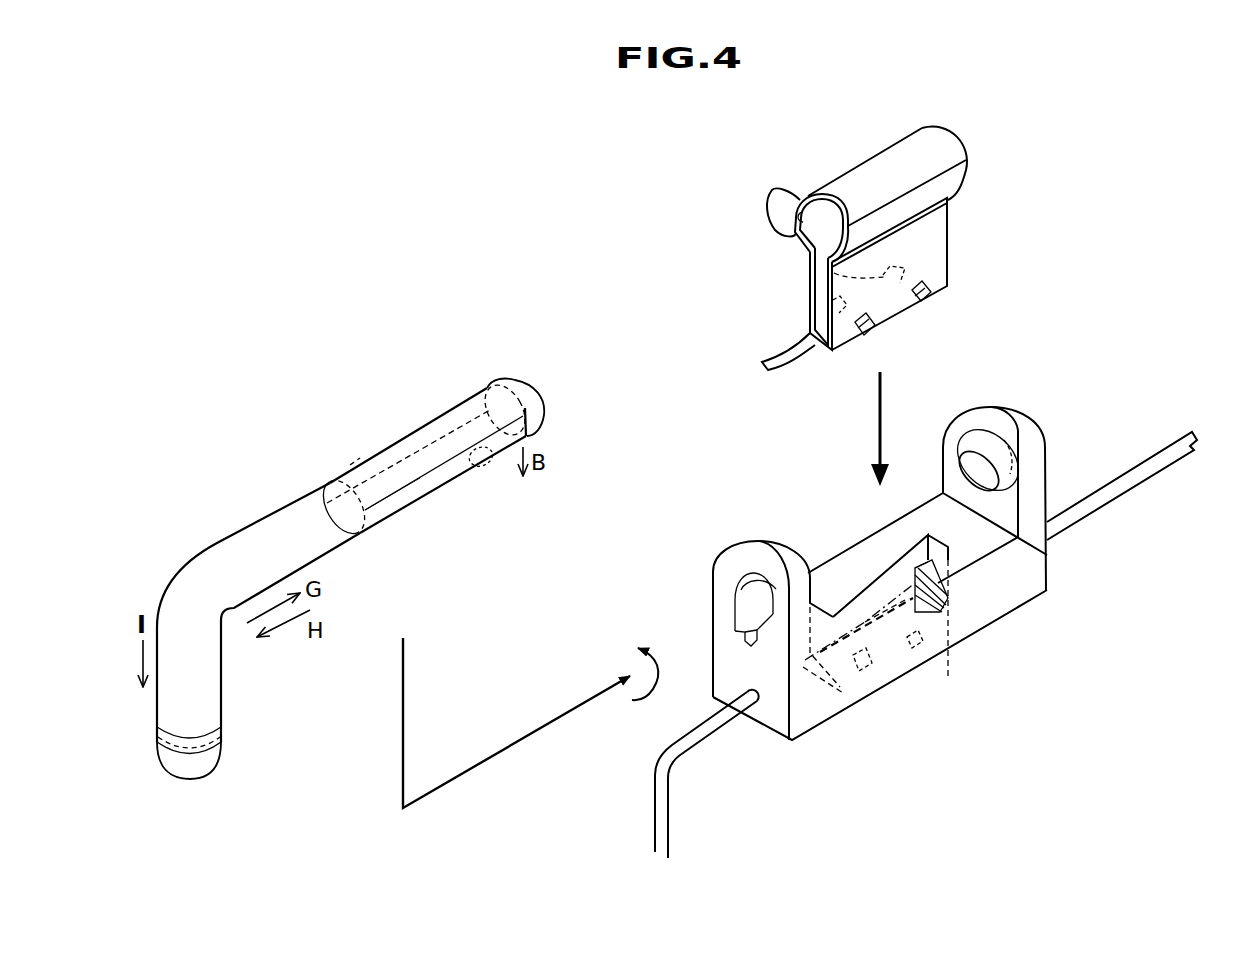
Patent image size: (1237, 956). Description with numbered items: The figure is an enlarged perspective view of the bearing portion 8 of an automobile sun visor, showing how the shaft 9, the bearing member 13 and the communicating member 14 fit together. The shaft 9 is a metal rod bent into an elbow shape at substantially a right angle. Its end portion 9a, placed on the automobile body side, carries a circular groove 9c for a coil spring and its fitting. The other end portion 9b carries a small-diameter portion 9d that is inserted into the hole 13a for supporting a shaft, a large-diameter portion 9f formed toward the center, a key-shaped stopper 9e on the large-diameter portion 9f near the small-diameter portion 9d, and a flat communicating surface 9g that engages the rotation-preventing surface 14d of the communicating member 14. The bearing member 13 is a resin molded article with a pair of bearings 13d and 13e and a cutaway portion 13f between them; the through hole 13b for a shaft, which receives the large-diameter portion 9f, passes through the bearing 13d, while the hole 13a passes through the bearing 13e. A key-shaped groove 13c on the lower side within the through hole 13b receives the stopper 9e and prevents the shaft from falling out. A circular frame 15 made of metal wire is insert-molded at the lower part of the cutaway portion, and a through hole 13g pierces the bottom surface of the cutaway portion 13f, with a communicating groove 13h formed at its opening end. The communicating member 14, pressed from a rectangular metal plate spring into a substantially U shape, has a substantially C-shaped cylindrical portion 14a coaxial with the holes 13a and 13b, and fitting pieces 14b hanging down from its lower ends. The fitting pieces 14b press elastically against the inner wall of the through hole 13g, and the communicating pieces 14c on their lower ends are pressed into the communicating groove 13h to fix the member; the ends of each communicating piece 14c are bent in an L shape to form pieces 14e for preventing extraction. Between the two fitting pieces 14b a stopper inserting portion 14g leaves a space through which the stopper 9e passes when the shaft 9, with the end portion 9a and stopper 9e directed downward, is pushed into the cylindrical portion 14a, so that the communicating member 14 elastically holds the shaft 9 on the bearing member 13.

The hinge assembly 8 is at (1016, 750).
The shaft 9 is at (231, 553).
The end portion 9a is at (218, 680).
The end portion 9b is at (440, 423).
The circular groove 9c is at (222, 733).
The portion with a small diameter 9d is at (518, 382).
The stopper 9e is at (490, 466).
The portion with a large diameter 9f is at (350, 465).
The flat communicating surface 9g is at (423, 487).
The bearing member 13 is at (987, 590).
The hole for supporting a shaft 13a is at (963, 453).
The through hole for a shaft 13b is at (735, 597).
The key-shaped groove 13c is at (752, 650).
The bearing 13d is at (763, 557).
The bearing 13e is at (1016, 428).
The cutaway portion 13f is at (967, 552).
The through hole 13g is at (913, 580).
The communicating groove 13h is at (843, 662).
The communicating member 14 is at (870, 170).
The cylindrical portion 14a is at (930, 143).
The fitting piece 14b is at (917, 245).
The communicating piece 14c is at (800, 287).
The surface for preventing rotation 14d is at (771, 197).
The piece for preventing the extraction 14e is at (770, 366).
The stopper inserting portion 14g is at (823, 308).
The circular frame 15 is at (662, 800).